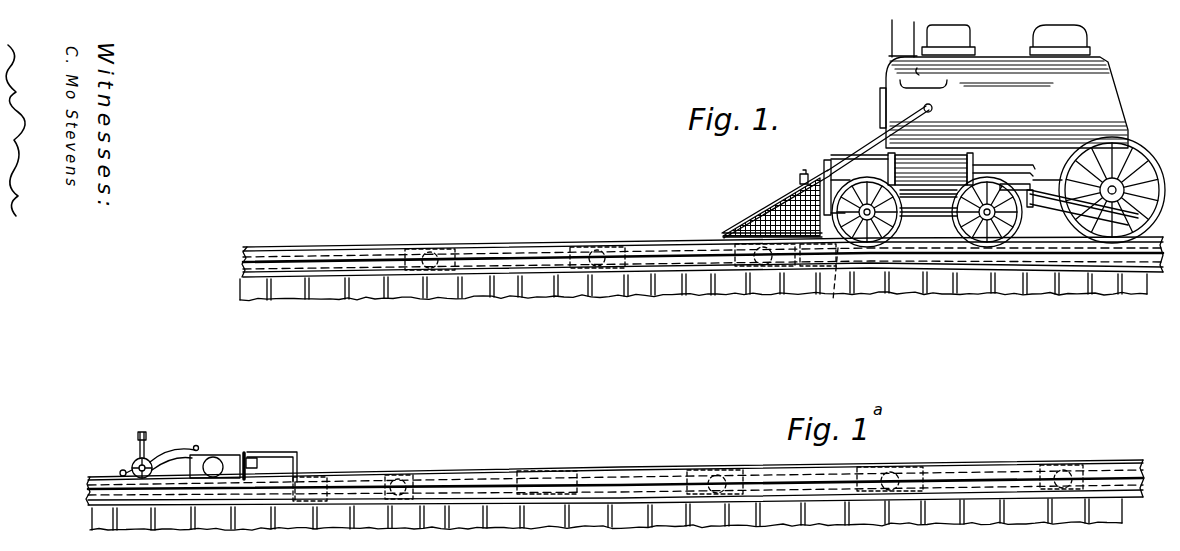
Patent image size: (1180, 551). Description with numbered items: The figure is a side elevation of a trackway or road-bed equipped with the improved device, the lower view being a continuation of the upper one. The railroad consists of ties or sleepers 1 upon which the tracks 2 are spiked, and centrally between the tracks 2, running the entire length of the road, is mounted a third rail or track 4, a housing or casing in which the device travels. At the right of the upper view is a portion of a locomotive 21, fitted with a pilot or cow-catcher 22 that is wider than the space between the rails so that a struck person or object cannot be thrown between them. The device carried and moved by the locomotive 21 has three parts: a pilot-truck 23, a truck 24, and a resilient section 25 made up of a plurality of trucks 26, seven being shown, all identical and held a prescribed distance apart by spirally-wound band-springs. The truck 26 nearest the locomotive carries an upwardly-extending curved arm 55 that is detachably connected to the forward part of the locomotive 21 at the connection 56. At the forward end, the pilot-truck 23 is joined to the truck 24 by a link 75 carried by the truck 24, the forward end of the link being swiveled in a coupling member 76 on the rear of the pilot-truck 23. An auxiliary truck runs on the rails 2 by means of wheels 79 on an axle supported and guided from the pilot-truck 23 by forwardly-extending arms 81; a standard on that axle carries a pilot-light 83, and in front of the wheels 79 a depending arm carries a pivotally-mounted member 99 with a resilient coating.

In FIG. 1, the ties or sleepers 1 is at (401, 295).
In FIG. 1A, the ties or sleepers 1 is at (545, 527).
In FIG. 1, the tracks 2 is at (281, 257).
In FIG. 1A, the tracks 2 is at (443, 478).
In FIG. 1, the third rail or track 4 is at (540, 246).
In FIG. 1A, the third rail or track 4 is at (505, 468).
In FIG. 1, the locomotive 21 is at (1004, 84).
In FIG. 1, the pilot or cow-catcher 22 is at (786, 202).
In FIG. 1A, the pilot-truck 23 is at (227, 455).
In FIG. 1A, the truck 24 is at (387, 471).
In FIG. 1, the resilient section 25 is at (703, 243).
In FIG. 1A, the resilient section 25 is at (615, 467).
In FIG. 1, the trucks 26 is at (515, 243).
In FIG. 1A, the trucks 26 is at (805, 466).
In FIG. 1, the curved arm 55 is at (824, 285).
In FIG. 1, the detachable connection 56 is at (806, 174).
In FIG. 1A, the link 75 is at (273, 452).
In FIG. 1A, the coupling member 76 is at (249, 452).
In FIG. 1A, the wheels 79 is at (138, 457).
In FIG. 1A, the forwardly-extending arms 81 is at (172, 452).
In FIG. 1A, the pilot-light 83 is at (145, 456).
In FIG. 1A, the pivotally-mounted member 99 is at (118, 460).